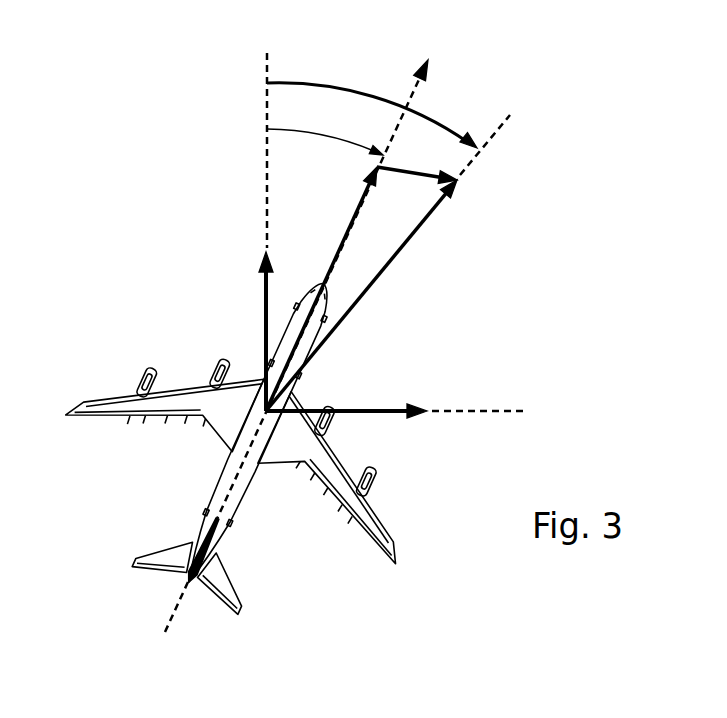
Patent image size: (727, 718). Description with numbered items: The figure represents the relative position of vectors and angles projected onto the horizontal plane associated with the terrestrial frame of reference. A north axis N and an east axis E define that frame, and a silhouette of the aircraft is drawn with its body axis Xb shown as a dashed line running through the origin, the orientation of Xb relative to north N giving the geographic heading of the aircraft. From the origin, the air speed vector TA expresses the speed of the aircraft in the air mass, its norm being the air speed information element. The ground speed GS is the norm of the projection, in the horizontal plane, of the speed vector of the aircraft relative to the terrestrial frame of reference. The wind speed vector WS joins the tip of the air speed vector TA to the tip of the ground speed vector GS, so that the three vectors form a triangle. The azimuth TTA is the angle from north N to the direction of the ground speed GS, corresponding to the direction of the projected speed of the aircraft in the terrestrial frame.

The aircraft body longitudinal axis Xb is at (313, 336).
The north axis N is at (252, 232).
The east axis E is at (394, 428).
The air speed vector TA is at (321, 289).
The ground speed GS is at (388, 263).
The wind speed vector WS is at (417, 164).
The azimuth (true track angle) TTA is at (372, 104).